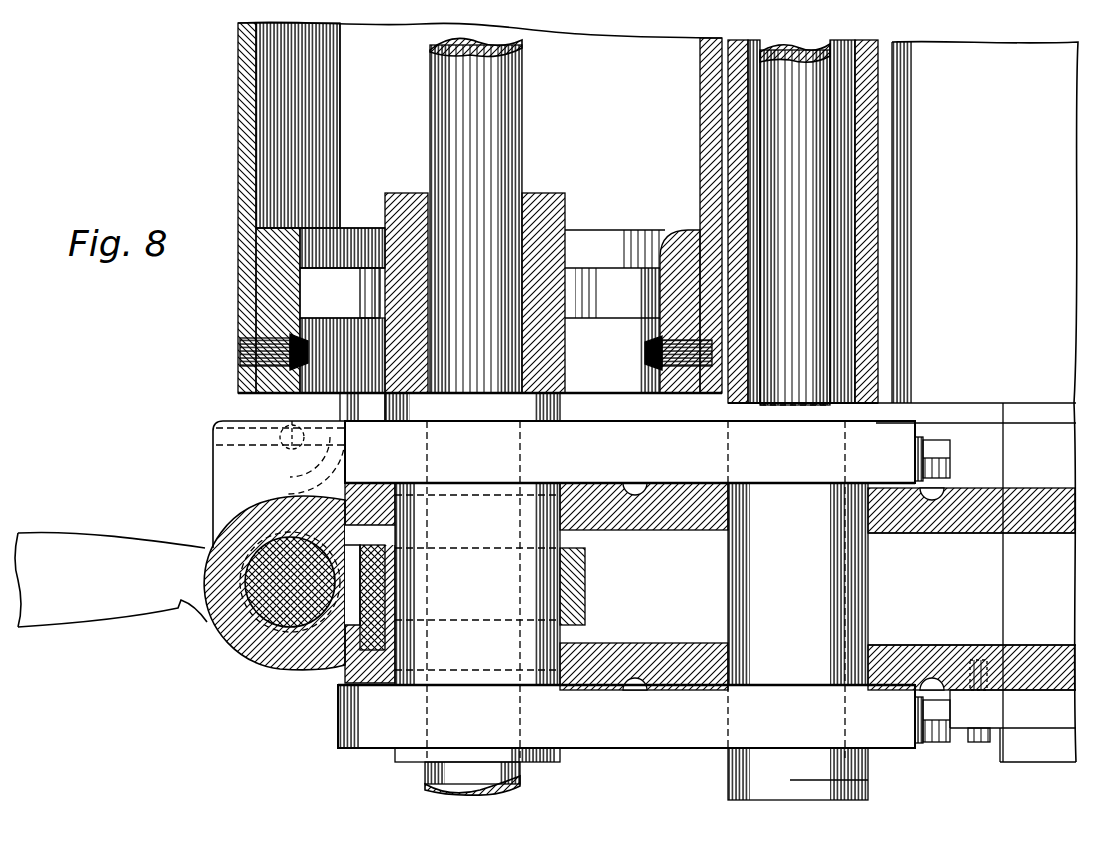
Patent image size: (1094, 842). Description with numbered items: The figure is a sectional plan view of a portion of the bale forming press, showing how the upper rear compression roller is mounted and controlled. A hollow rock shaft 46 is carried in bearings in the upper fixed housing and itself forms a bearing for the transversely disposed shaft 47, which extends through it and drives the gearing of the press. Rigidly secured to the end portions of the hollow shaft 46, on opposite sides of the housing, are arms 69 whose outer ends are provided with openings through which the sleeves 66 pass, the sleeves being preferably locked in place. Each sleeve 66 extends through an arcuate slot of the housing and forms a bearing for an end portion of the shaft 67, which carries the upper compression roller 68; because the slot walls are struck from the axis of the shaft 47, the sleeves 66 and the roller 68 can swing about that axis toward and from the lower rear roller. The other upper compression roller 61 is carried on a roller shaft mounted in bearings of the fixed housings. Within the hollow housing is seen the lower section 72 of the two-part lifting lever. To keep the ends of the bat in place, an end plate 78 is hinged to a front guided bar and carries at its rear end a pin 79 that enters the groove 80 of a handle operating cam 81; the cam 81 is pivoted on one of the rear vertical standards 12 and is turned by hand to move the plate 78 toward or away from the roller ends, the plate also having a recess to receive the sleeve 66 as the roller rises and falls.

The vertical standard 12 is at (300, 697).
The hollow rock shaft 46 is at (866, 592).
The transversely disposed shaft 47 is at (795, 224).
The upper compression roller 61 is at (966, 401).
The sleeve 66 is at (472, 594).
The shaft 67 is at (476, 215).
The upper compression roller 68 is at (257, 107).
The arm 69 is at (644, 584).
The lower section of lifting lever 72 is at (582, 586).
The end plate 78 is at (240, 398).
The pin 79 is at (290, 446).
The groove 80 is at (215, 440).
The handle operating cam 81 is at (181, 620).